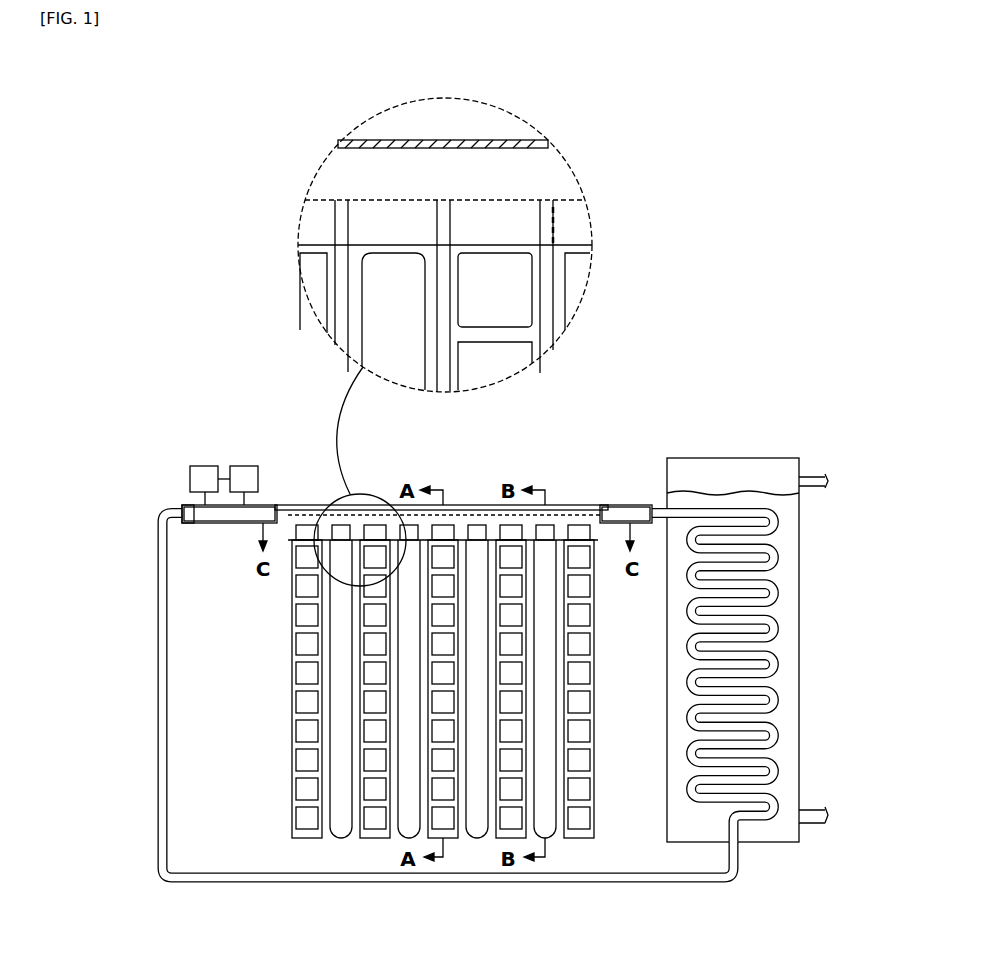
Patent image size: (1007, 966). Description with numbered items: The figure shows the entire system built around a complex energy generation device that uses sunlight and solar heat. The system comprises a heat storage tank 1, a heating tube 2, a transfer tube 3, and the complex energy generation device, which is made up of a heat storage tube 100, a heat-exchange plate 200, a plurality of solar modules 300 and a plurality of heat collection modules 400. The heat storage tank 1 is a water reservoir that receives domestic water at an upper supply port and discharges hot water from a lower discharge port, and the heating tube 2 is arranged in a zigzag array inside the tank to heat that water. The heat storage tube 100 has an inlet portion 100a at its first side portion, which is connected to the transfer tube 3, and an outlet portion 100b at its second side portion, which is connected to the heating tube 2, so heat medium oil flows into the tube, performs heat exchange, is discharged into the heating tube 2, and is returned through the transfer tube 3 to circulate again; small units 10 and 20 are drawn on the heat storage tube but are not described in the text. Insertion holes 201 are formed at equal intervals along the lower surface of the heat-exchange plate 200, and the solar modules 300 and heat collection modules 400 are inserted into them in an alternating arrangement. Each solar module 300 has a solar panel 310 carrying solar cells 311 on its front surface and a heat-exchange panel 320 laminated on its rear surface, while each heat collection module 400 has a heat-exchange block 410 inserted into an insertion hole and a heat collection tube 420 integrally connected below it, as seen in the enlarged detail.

The heat storage tank 1 is at (718, 465).
The heating tube 2 is at (778, 558).
The transfer tube 3 is at (482, 883).
The pump (M) 10 is at (208, 466).
The sensor (S) 20 is at (243, 466).
The heat storage tube 100 is at (230, 533).
The header inlet side 100a is at (182, 508).
The header outlet side 100b is at (657, 505).
The heat-exchange plate 200 is at (604, 548).
The insertion holes 201 is at (393, 202).
The solar module 300 is at (305, 846).
The solar panel 310 is at (540, 277).
The solar cells 311 is at (293, 708).
The heat-exchange panel 320 is at (520, 223).
The heat collection module 400 is at (346, 848).
The heat-exchange block 410 is at (375, 225).
The heat collection tube 420 is at (382, 295).